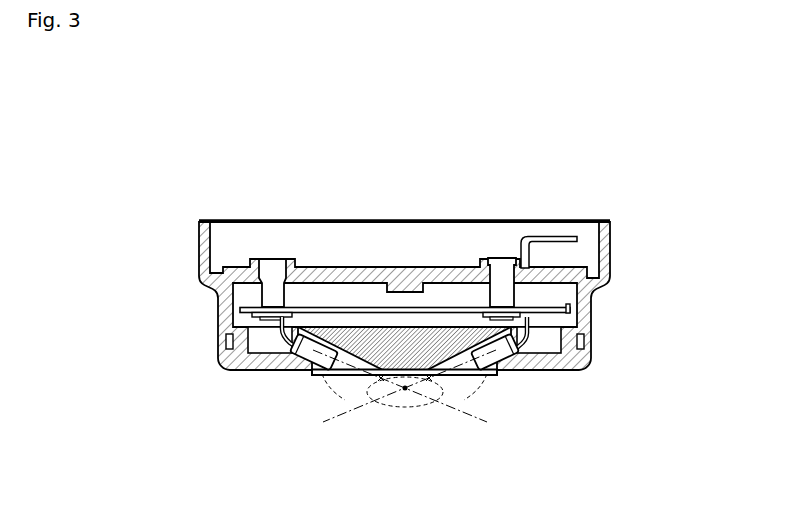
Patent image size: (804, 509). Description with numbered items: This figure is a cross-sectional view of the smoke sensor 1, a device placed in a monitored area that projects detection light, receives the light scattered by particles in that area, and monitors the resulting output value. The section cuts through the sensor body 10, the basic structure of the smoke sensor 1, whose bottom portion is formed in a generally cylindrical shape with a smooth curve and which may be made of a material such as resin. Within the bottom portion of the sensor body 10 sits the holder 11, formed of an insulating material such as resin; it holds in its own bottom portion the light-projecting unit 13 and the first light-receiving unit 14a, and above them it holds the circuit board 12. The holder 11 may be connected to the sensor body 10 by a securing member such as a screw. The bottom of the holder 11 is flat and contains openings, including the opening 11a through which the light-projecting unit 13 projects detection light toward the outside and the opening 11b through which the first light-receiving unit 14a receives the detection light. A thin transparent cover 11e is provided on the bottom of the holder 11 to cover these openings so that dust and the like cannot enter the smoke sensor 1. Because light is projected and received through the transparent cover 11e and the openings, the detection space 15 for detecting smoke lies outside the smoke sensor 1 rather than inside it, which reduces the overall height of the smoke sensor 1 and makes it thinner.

The smoke sensor 1 is at (298, 164).
The sensor body 10 is at (200, 237).
The holder 11 is at (441, 325).
The opening 11a is at (347, 375).
The opening 11b is at (465, 372).
The transparent cover 11e is at (313, 376).
The circuit board 12 is at (557, 317).
The light-projecting unit 13 is at (297, 372).
The first light-receiving unit 14a is at (515, 368).
The detection space 15 is at (405, 392).